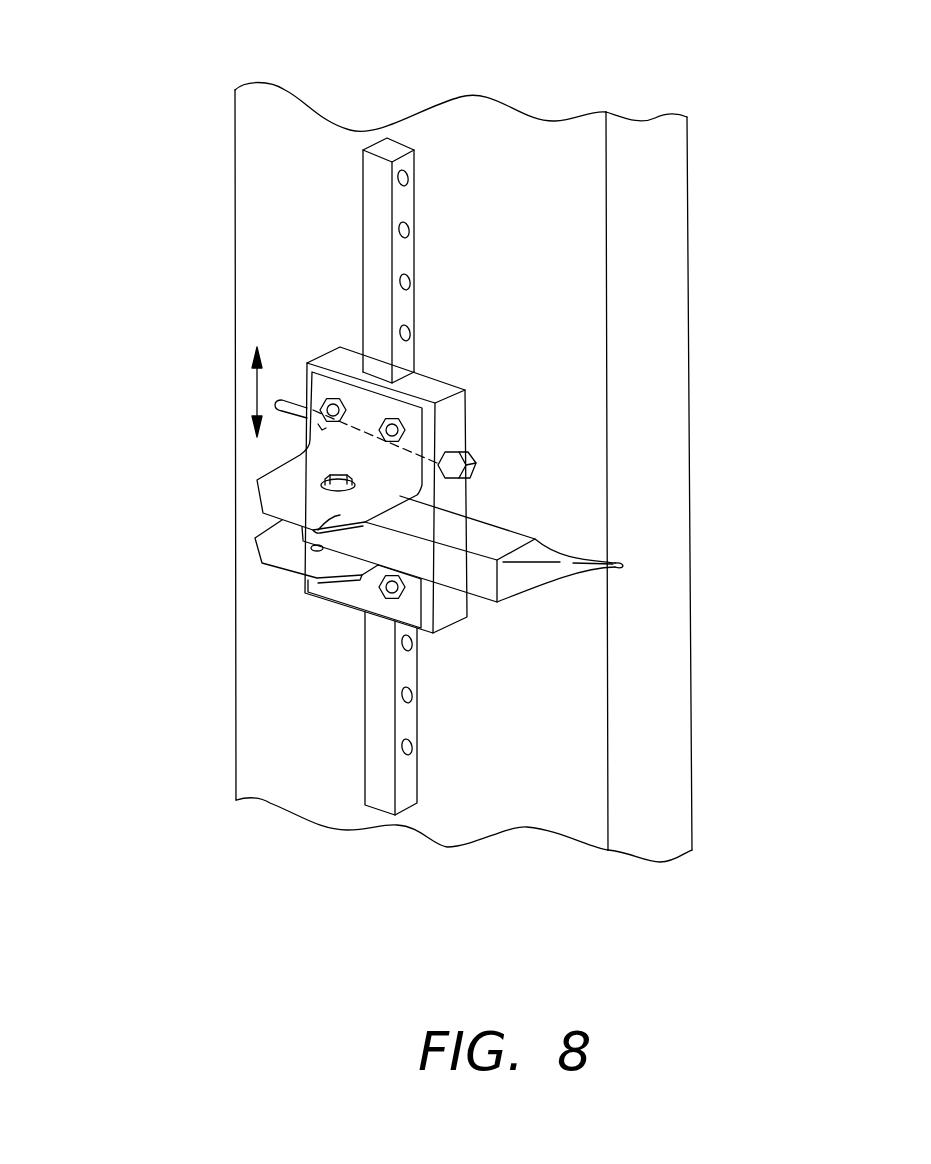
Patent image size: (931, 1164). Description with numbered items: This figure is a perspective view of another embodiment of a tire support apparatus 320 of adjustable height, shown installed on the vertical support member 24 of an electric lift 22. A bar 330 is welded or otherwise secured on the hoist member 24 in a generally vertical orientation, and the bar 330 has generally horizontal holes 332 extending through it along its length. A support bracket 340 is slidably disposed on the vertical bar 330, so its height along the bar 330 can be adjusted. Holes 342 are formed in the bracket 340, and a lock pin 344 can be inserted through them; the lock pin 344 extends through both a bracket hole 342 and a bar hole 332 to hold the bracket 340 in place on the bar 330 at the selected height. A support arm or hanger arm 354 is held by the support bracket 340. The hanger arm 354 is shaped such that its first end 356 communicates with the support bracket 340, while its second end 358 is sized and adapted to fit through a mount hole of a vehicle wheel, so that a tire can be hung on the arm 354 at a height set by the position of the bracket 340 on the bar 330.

The electric lift 22 is at (657, 73).
The vertical support member 24 is at (585, 245).
The tire support apparatus 320 is at (217, 417).
The bar 330 is at (377, 197).
The holes 332 is at (406, 226).
The support bracket 340 is at (275, 487).
The holes 342 is at (438, 450).
The lock pin 344 is at (468, 460).
The hanger arm 354 is at (475, 530).
The first end 356 is at (255, 538).
The second end 358 is at (616, 560).